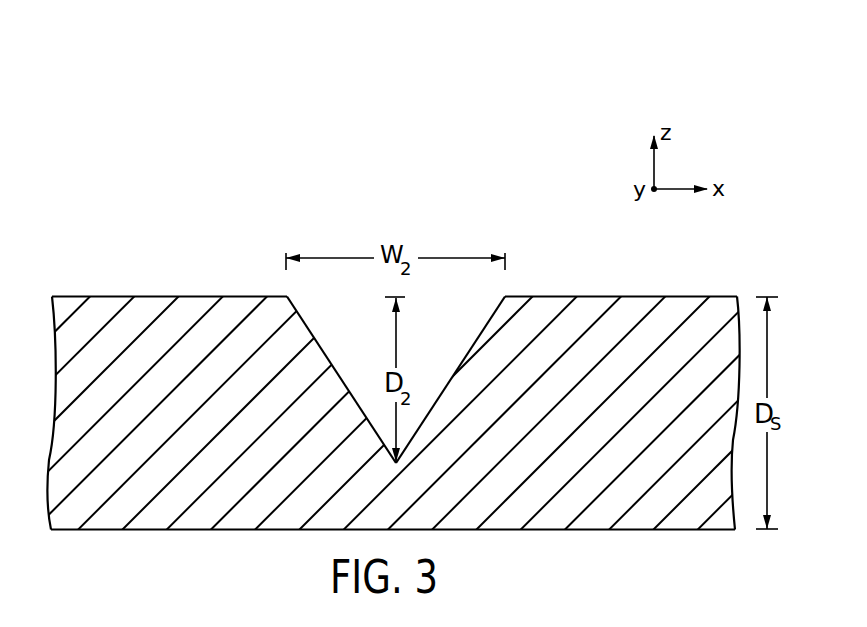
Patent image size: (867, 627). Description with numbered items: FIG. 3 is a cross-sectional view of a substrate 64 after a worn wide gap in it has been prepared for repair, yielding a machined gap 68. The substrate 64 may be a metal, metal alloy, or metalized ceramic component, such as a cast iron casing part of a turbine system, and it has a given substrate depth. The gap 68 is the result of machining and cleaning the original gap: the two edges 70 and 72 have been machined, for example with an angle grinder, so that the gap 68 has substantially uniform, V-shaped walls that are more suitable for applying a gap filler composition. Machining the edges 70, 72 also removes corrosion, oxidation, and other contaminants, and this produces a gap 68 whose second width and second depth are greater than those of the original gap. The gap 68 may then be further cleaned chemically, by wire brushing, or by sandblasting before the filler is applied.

The substrate 64 is at (634, 296).
The gap 68 is at (415, 364).
The edge 70 is at (338, 376).
The edge 72 is at (452, 377).